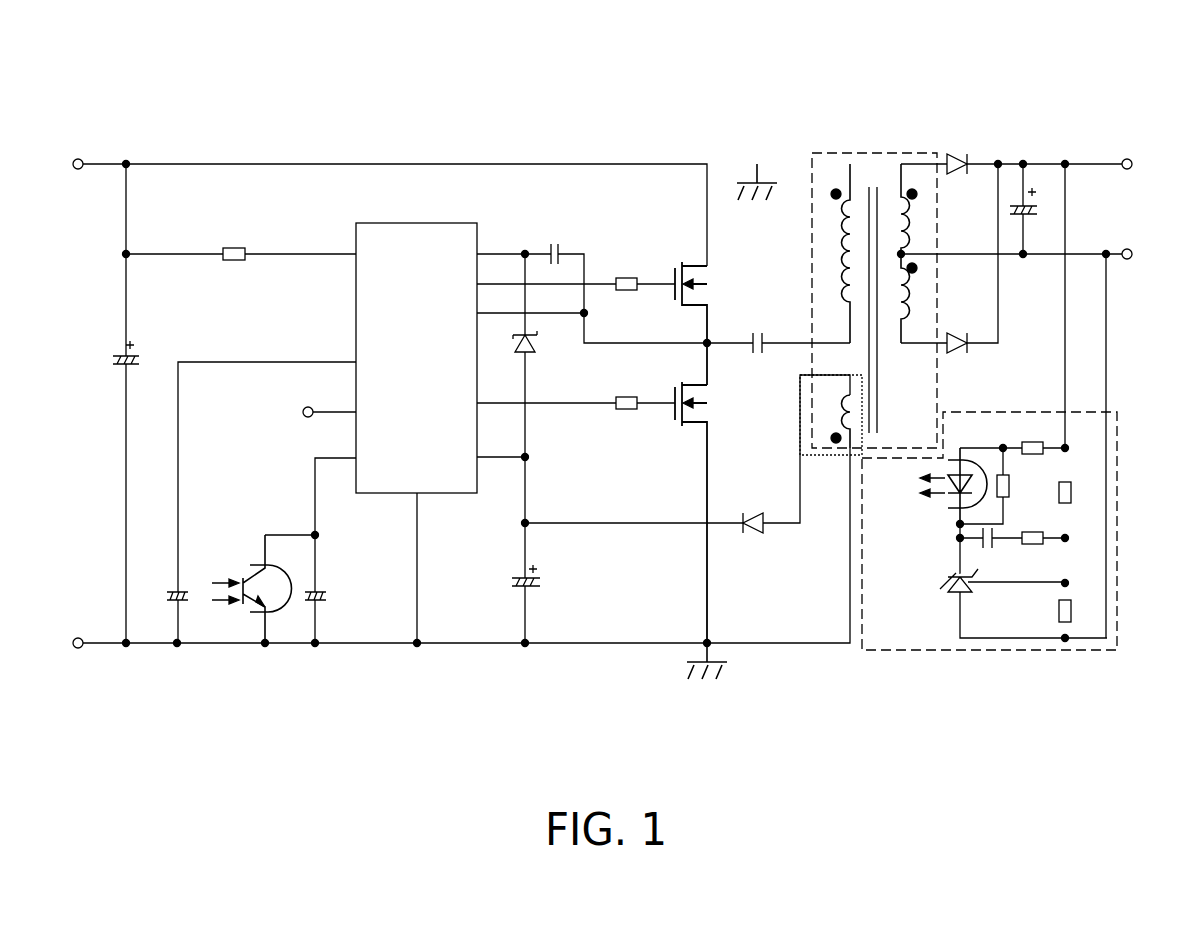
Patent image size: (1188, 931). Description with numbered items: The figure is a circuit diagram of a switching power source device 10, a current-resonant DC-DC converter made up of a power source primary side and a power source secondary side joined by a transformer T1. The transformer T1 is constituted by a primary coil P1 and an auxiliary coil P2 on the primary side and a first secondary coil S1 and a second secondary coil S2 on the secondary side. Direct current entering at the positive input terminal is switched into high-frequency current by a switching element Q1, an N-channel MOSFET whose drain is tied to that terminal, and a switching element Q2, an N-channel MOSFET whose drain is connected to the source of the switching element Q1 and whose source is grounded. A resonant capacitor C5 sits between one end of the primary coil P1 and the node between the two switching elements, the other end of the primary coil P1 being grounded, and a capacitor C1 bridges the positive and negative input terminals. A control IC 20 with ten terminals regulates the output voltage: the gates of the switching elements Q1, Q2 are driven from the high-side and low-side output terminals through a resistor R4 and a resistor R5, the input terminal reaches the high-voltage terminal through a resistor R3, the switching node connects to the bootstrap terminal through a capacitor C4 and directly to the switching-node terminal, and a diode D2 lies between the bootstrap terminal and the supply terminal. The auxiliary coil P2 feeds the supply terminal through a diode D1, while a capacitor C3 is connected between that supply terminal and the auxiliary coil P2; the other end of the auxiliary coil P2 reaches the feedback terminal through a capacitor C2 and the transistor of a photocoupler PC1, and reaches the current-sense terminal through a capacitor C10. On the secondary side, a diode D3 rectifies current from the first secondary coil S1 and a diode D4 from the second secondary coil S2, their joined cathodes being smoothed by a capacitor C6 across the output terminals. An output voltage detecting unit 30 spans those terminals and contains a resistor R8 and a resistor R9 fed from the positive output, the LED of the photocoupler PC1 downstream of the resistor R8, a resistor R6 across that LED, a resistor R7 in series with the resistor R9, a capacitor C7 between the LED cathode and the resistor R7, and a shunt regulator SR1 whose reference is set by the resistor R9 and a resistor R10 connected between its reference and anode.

The switching power source device 10 is at (1093, 122).
The control IC 20 is at (478, 223).
The output voltage detecting unit 30 is at (1003, 652).
The capacitor C1 is at (140, 346).
The capacitor C2 is at (330, 588).
The capacitor C3 is at (514, 577).
The capacitor C4 is at (554, 243).
The resonant capacitor C5 is at (757, 332).
The capacitor C6 is at (1037, 204).
The capacitor C7 is at (998, 547).
The capacitor C10 is at (168, 588).
The resistor R3 is at (234, 245).
The resistor R4 is at (626, 275).
The resistor R5 is at (626, 394).
The resistor R6 is at (1016, 486).
The resistor R7 is at (1032, 528).
The resistor R8 is at (1032, 438).
The resistor R9 is at (1078, 492).
The resistor R10 is at (1083, 611).
The diode D1 is at (753, 519).
The diode D2 is at (541, 344).
The diode D3 is at (956, 150).
The diode D4 is at (956, 354).
The switching element Q1 is at (699, 314).
The switching element Q2 is at (699, 497).
The transformer T1 is at (868, 293).
The primary coil P1 is at (832, 253).
The auxiliary coil P2 is at (831, 415).
The first secondary coil S1 is at (918, 209).
The second secondary coil S2 is at (918, 298).
The photocoupler PC1 is at (596, 545).
The shunt regulator SR1 is at (942, 581).